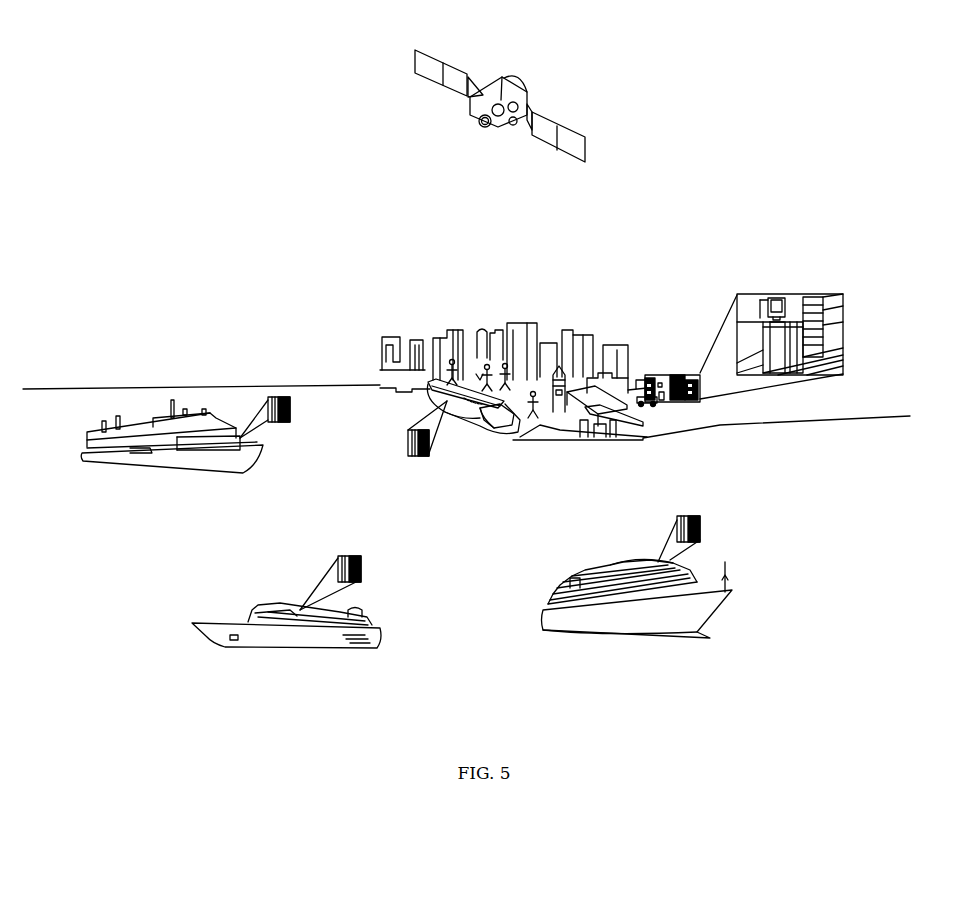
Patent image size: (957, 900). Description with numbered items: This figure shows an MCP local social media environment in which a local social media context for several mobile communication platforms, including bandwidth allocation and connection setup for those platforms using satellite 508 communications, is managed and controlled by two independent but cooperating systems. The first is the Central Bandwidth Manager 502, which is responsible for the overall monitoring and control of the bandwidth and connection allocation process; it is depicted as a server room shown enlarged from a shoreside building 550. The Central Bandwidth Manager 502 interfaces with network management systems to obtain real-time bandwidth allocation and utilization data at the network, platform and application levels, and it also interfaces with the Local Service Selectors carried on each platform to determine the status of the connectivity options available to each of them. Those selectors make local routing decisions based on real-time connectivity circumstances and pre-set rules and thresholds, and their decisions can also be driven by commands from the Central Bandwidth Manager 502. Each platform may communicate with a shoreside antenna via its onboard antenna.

The Central Bandwidth Manager (CBM) 502 is at (837, 323).
The satellite 508 is at (483, 128).
The building (data center facility) 550 is at (743, 337).